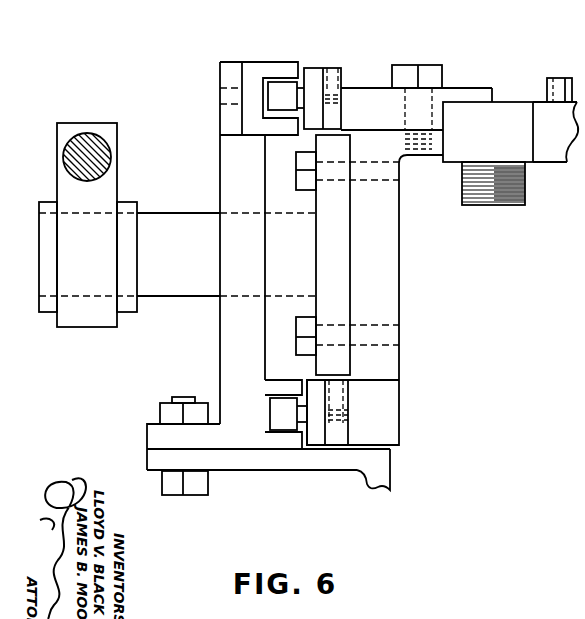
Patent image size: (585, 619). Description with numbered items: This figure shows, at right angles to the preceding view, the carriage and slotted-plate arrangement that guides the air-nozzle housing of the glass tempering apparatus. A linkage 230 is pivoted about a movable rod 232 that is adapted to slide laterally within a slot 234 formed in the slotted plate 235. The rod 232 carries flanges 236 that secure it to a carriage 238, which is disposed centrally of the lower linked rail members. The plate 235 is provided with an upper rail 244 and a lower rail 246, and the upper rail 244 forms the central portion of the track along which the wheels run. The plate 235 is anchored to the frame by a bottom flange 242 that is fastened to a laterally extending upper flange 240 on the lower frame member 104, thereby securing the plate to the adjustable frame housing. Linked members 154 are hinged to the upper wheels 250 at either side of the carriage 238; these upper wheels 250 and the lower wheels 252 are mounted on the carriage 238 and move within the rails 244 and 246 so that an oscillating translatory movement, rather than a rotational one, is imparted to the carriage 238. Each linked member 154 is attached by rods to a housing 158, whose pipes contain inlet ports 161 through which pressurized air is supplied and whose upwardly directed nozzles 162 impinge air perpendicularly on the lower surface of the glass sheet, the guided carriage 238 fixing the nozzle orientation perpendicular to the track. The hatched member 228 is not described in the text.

The lower frame member 104 is at (385, 483).
The linked member 154 is at (318, 68).
The housing 158 is at (553, 156).
The inlet port 161 is at (508, 204).
The nozzle 162 is at (548, 84).
The shaft 228 is at (106, 141).
The linkage 230 is at (88, 123).
The movable rod 232 is at (129, 257).
The slot 234 is at (237, 300).
The slotted plate 235 is at (220, 178).
The flange 236 is at (322, 362).
The carriage 238 is at (399, 214).
The upper flange 240 is at (233, 466).
The bottom flange 242 is at (153, 433).
The upper rail 244 is at (262, 127).
The lower rail 246 is at (300, 395).
The upper wheel 250 is at (279, 83).
The lower wheel 252 is at (285, 427).